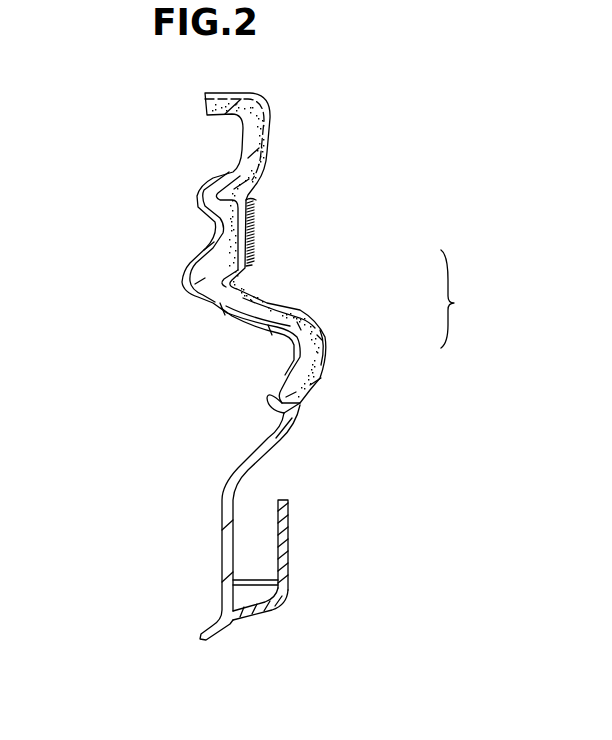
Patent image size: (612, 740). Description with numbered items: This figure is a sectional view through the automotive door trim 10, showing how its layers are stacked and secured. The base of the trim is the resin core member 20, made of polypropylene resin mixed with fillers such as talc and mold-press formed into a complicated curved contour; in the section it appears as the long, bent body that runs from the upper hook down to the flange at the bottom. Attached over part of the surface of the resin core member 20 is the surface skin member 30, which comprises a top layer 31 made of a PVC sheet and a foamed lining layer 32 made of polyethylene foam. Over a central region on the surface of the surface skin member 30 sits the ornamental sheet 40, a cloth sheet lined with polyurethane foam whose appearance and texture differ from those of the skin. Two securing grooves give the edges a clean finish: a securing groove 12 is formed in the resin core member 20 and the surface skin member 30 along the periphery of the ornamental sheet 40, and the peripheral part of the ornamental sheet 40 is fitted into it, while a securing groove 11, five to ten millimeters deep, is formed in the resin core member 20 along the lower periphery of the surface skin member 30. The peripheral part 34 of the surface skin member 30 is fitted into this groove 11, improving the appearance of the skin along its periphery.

The automotive door trim 10 is at (190, 143).
The securing groove 11 is at (268, 408).
The securing groove 12 is at (216, 195).
The resin core member 20 is at (250, 330).
The surface skin member 30 is at (366, 307).
The top layer 31 is at (307, 320).
The foamed lining layer 32 is at (323, 342).
The peripheral part 34 is at (300, 403).
The ornamental sheet 40 is at (243, 243).